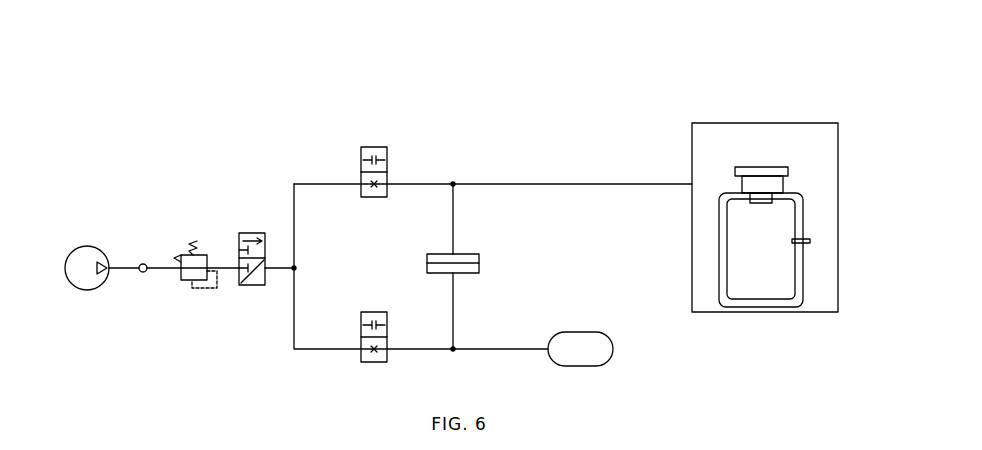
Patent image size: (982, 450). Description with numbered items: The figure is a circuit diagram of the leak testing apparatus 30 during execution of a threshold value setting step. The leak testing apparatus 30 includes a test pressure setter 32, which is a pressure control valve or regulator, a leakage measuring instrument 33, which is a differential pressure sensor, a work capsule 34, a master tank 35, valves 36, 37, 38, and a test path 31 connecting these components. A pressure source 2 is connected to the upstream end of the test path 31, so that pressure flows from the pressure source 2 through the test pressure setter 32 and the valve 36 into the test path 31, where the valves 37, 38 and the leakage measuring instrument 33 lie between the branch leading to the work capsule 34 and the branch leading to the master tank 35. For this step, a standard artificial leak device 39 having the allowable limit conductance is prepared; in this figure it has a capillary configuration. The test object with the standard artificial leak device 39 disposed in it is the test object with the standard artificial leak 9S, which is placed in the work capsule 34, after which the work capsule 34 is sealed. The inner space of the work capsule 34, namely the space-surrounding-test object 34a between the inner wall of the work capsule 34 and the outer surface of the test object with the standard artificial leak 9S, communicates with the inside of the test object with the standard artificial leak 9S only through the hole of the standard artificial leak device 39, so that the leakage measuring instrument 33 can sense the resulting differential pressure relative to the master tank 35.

The leak testing apparatus 30 is at (107, 165).
The test path 31 is at (420, 183).
The pressure source 2 is at (87, 288).
The test pressure setter 32 is at (185, 282).
The valve 36 is at (248, 232).
The valve 37 is at (360, 162).
The valve 38 is at (360, 317).
The leakage measuring instrument 33 is at (480, 267).
The master tank 35 is at (608, 360).
The work capsule 34 is at (720, 122).
The space-surrounding-test object 34a is at (800, 148).
The test object with the standard artificial leak 9S is at (720, 242).
The standard artificial leak device 39 is at (808, 233).